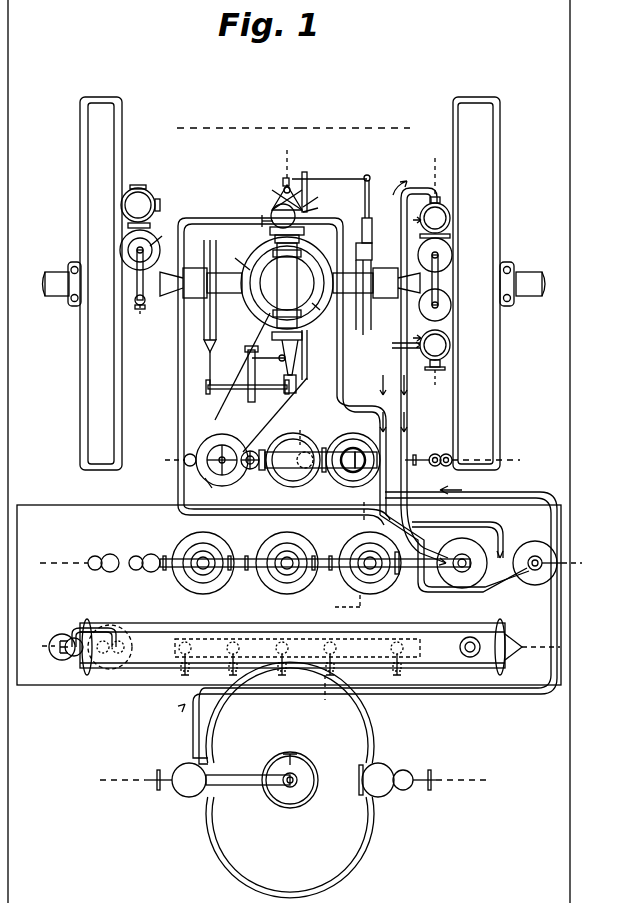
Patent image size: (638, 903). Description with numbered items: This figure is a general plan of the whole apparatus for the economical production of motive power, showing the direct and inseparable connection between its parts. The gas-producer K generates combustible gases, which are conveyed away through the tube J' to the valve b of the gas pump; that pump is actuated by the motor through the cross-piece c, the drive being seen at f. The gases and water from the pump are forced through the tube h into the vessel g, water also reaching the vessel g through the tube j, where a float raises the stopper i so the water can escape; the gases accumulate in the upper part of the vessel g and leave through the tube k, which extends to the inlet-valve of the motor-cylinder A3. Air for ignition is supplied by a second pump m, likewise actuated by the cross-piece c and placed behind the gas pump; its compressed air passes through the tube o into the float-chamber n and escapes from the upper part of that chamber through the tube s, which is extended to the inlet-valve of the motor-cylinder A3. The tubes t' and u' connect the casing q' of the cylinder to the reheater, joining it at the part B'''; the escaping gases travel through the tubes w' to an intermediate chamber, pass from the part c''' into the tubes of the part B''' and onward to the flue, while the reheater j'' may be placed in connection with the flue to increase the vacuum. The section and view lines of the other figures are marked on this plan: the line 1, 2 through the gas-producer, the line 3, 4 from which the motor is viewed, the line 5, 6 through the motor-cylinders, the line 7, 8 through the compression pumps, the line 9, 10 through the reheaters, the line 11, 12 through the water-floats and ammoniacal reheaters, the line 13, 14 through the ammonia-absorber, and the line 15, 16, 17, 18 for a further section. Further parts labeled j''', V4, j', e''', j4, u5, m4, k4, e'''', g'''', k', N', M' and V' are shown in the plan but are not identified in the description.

The section line 1 is at (122, 772).
The section line 2 is at (463, 771).
The view line 3 is at (230, 124).
The view line 4 is at (361, 125).
The section line 5 is at (293, 161).
The section line 6 is at (302, 431).
The section line 7 is at (428, 175).
The section line 8 is at (280, 414).
The section line 9 is at (167, 452).
The section line 10 is at (476, 460).
The section line 11 is at (64, 553).
The section line 12 is at (581, 555).
The section line 13 is at (250, 580).
The section line 14 is at (536, 638).
The section line 15 is at (356, 504).
The section line 16 is at (371, 604).
The section line 17 is at (339, 607).
The section line 18 is at (385, 540).
The motor-cylinder A3 is at (287, 315).
The cross-piece c is at (290, 283).
The casing q' is at (278, 287).
The tube s is at (277, 366).
The valve b is at (435, 217).
The left pulley valve j''' is at (147, 245).
The air vessel pipe V4 is at (292, 283).
The stopper i is at (317, 207).
The tube k is at (429, 408).
The tube h is at (448, 369).
The pipe j' is at (394, 231).
The pump drive f is at (435, 271).
The pump m is at (437, 329).
The tube o is at (350, 466).
The tube u' is at (250, 366).
The tube t' is at (263, 391).
The drum e''' is at (310, 460).
The reheater j'' is at (353, 456).
The reheater part B''' is at (224, 466).
The tube J' is at (289, 620).
The small wheel j4 is at (103, 554).
The small wheel u5 is at (299, 555).
The drum m4 is at (287, 561).
The drum k4 is at (370, 561).
The float-chamber n is at (462, 563).
The tube j is at (442, 554).
The vessel g is at (537, 561).
The reheater part c''' is at (292, 649).
The rod e'''' is at (266, 628).
The gland g'''' is at (285, 644).
The gas-producer K is at (290, 780).
The pipe elbow k' is at (199, 745).
The sphere valve N' is at (224, 781).
The inlet M' is at (150, 784).
The outlet valve V' is at (376, 790).
The tubes w' is at (414, 780).